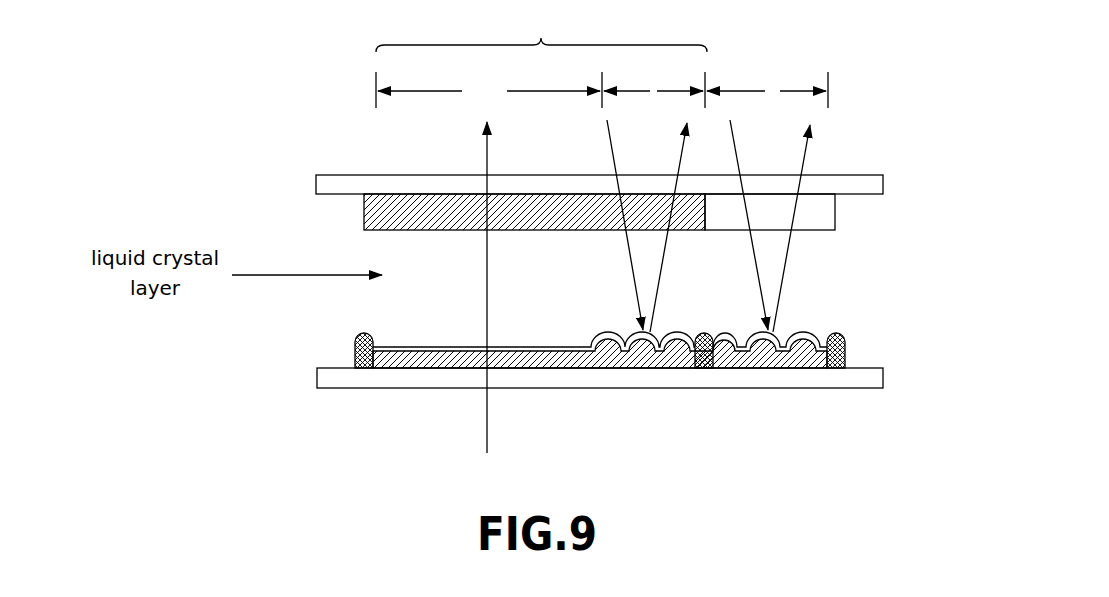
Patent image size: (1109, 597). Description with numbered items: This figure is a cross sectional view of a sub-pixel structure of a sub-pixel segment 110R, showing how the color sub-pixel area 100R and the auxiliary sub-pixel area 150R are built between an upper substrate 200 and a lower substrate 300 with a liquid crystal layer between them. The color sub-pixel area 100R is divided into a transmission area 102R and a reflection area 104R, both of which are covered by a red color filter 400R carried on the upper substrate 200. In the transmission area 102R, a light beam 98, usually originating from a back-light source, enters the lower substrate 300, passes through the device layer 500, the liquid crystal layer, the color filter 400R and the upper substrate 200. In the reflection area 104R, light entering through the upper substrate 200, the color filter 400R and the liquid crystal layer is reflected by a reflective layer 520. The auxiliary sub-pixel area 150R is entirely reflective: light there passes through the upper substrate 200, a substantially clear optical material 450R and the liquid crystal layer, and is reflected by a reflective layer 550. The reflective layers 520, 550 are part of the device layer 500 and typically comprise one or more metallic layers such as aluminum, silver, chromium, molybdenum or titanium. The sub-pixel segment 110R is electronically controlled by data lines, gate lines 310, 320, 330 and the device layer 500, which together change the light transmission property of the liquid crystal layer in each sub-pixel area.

The color sub-pixel area 100R is at (541, 30).
The transmission area 102R is at (489, 85).
The reflection area 104R is at (654, 84).
The auxiliary sub-pixel area 150R is at (767, 84).
The sub-pixel segment 110R is at (274, 131).
The upper substrate 200 is at (385, 180).
The red color filter 400R is at (393, 223).
The substantially clear optical material 450R is at (816, 222).
The light beam 98 is at (488, 413).
The lower substrate 300 is at (363, 377).
The gate line 330 is at (355, 340).
The gate line 320 is at (705, 370).
The gate line 310 is at (845, 352).
The device layer 500 is at (575, 365).
The reflective layer 520 is at (632, 357).
The reflective layer 550 is at (788, 362).